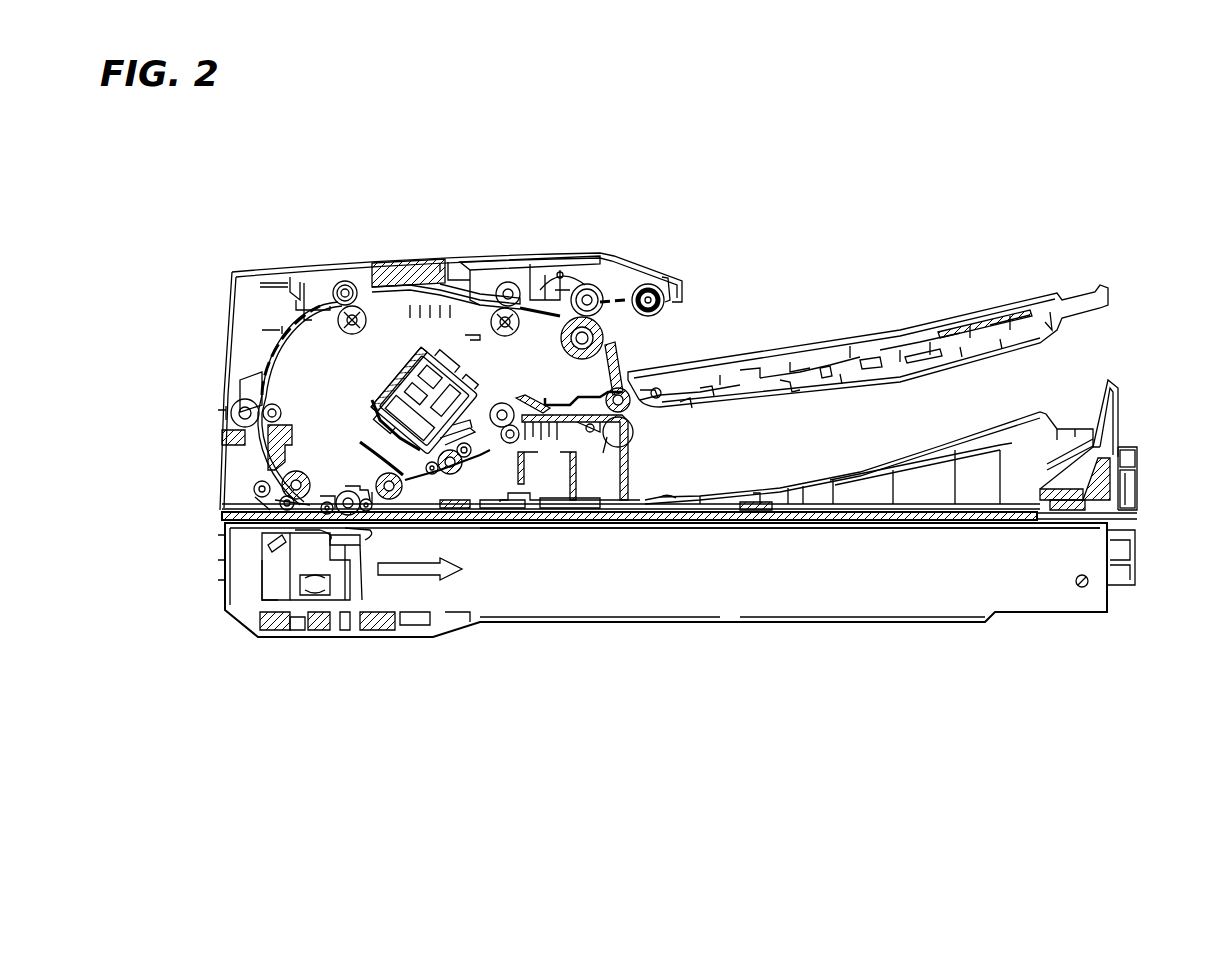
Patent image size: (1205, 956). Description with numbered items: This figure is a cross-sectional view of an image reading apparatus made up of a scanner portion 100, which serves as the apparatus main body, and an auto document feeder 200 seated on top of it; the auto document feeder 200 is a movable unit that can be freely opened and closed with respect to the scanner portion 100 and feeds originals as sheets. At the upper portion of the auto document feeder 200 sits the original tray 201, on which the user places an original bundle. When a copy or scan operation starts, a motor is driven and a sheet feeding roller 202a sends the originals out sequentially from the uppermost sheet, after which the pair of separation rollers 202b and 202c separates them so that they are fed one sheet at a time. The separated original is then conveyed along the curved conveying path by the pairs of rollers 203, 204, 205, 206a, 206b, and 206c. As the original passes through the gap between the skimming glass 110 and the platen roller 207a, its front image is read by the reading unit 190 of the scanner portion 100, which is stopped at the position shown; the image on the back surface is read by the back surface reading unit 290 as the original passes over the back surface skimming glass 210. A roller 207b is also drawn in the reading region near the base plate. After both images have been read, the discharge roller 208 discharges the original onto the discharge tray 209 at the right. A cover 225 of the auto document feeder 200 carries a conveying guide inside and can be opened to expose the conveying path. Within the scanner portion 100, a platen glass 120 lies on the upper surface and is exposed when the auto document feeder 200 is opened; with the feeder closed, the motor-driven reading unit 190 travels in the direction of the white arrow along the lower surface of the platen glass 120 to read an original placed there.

The scanner portion 100 is at (228, 634).
The skimming glass 110 is at (350, 522).
The platen glass 120 is at (862, 522).
The reading unit 190 is at (362, 572).
The auto document feeder (ADF) 200 is at (220, 256).
The original tray 201 is at (814, 336).
The sheet feeding roller 202a is at (680, 282).
The separation roller 202b is at (594, 300).
The separation roller 202c is at (580, 350).
The pair of rollers 203 is at (503, 336).
The pair of rollers 204 is at (343, 285).
The pair of rollers 205 is at (232, 410).
The pair of rollers 206a is at (262, 478).
The pair of rollers 206b is at (386, 478).
The pair of rollers 206c is at (554, 516).
The platen roller 207a is at (344, 490).
The reading glass 207b is at (500, 516).
The discharge roller 208 is at (626, 432).
The discharge tray 209 is at (786, 488).
The back surface skimming glass 210 is at (462, 516).
The cover 225 is at (488, 282).
The back surface reading unit 290 is at (400, 387).